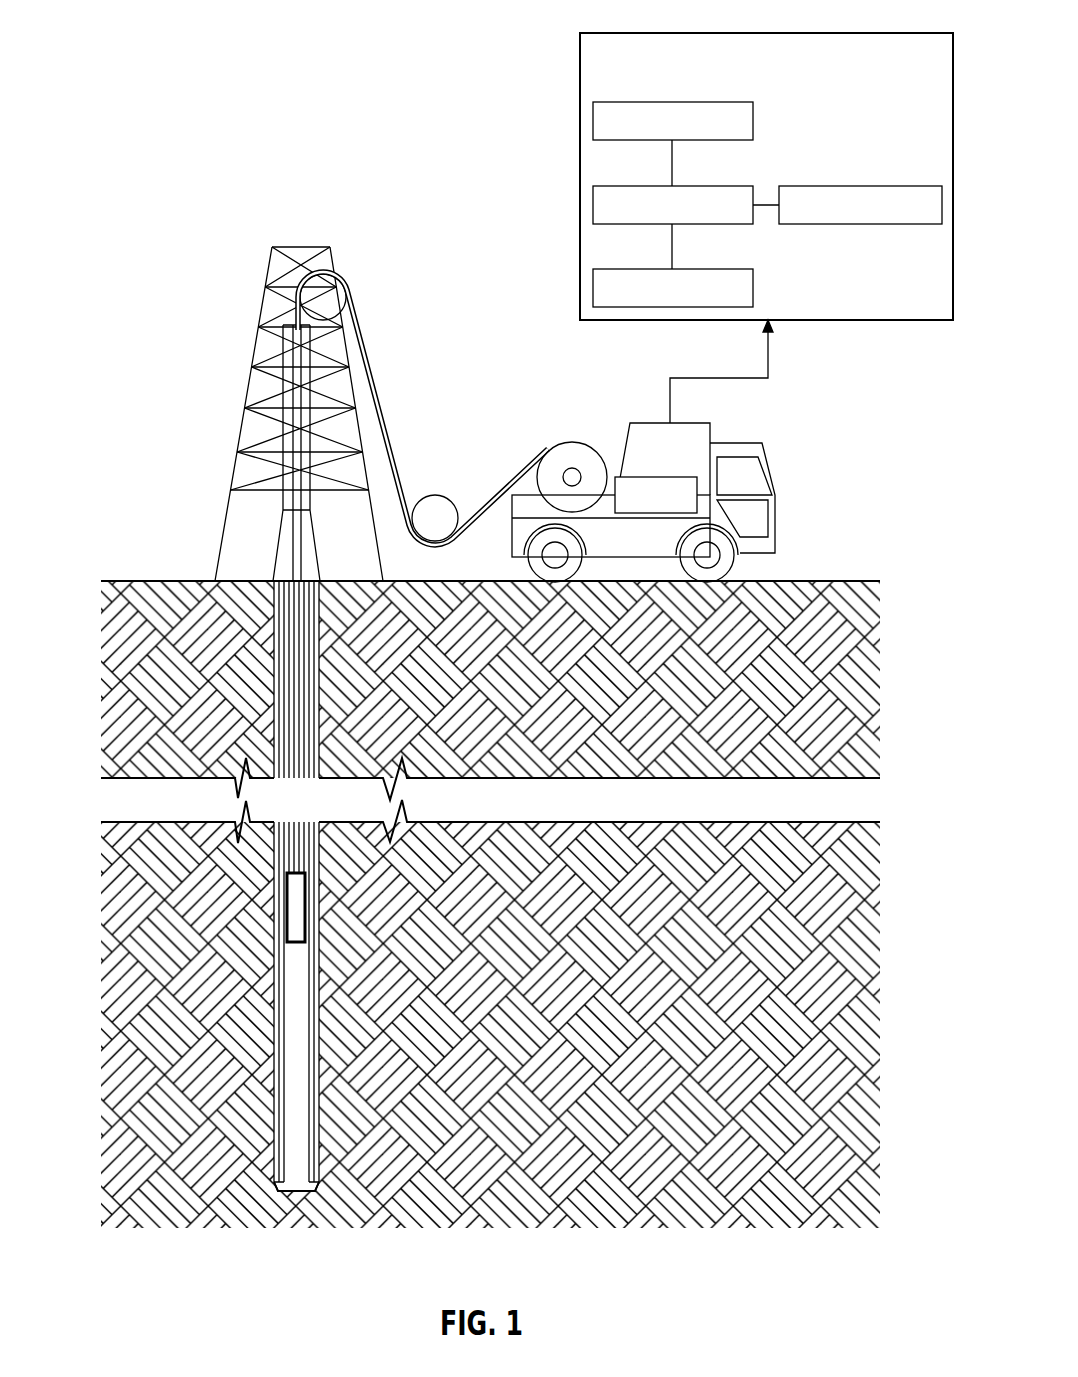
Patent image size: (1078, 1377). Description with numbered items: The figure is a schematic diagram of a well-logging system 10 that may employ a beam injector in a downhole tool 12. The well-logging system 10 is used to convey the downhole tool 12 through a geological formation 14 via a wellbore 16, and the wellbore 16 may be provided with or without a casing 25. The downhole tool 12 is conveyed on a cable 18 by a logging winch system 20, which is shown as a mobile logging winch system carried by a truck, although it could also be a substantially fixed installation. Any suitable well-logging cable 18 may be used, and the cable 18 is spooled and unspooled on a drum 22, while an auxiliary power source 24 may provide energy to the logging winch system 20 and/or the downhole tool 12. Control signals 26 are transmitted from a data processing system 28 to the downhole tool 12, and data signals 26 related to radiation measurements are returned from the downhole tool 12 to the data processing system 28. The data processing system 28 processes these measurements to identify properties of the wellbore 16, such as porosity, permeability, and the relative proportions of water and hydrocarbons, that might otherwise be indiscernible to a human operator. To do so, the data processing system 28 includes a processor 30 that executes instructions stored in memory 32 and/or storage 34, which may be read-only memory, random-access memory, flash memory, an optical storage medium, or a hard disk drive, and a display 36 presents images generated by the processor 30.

The well-logging system 10 is at (190, 254).
The downhole tool 12 is at (290, 885).
The geological formation 14 is at (160, 1015).
The wellbore 16 is at (270, 628).
The cable 18 is at (388, 383).
The logging winch system 20 is at (632, 478).
The drum 22 is at (556, 447).
The auxiliary power source 24 is at (654, 477).
The casing 25 is at (275, 1150).
The control signals and data signals 26 is at (770, 356).
The data processing system 28 is at (737, 163).
The processor 30 is at (592, 206).
The memory 32 is at (592, 122).
The storage 34 is at (592, 290).
The display 36 is at (835, 186).